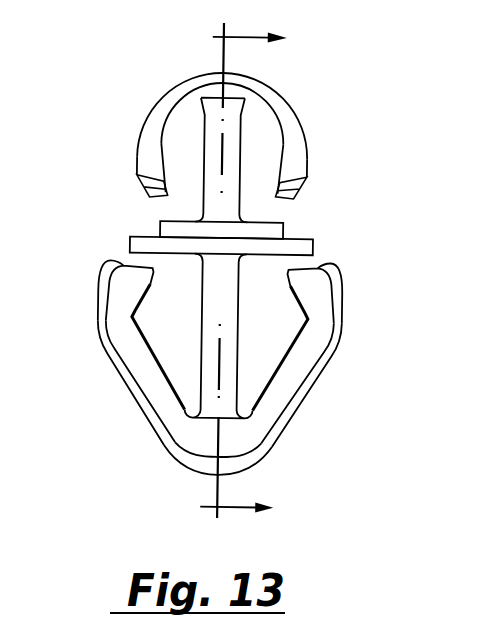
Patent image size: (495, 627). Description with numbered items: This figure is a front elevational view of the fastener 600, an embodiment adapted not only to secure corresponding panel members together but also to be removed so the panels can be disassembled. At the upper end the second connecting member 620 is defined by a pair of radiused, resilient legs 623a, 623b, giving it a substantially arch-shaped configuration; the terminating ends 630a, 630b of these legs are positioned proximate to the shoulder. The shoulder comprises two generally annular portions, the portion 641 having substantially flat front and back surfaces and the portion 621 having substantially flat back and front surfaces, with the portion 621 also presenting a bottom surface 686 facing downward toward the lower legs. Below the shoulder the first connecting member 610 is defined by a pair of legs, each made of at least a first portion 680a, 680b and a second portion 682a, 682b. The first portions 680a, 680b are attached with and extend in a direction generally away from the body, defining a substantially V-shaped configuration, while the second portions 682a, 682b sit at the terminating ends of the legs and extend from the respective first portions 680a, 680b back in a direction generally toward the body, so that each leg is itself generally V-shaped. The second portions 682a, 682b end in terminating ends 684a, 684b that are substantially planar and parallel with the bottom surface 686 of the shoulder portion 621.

The fastener 600 is at (115, 121).
The second connecting member 620 is at (290, 86).
The leg 623a is at (173, 88).
The leg 623b is at (309, 128).
The terminating end 630a is at (150, 190).
The terminating end 630b is at (307, 189).
The portion of the shoulder 641 is at (287, 227).
The portion of the shoulder 621 is at (130, 237).
The bottom surface 686 is at (315, 256).
The terminating end 684a is at (112, 260).
The terminating end 684b is at (322, 264).
The second portion 682a is at (102, 291).
The second portion 682b is at (341, 300).
The first portion 680a is at (118, 367).
The first portion 680b is at (313, 380).
The first connecting member 610 is at (168, 463).